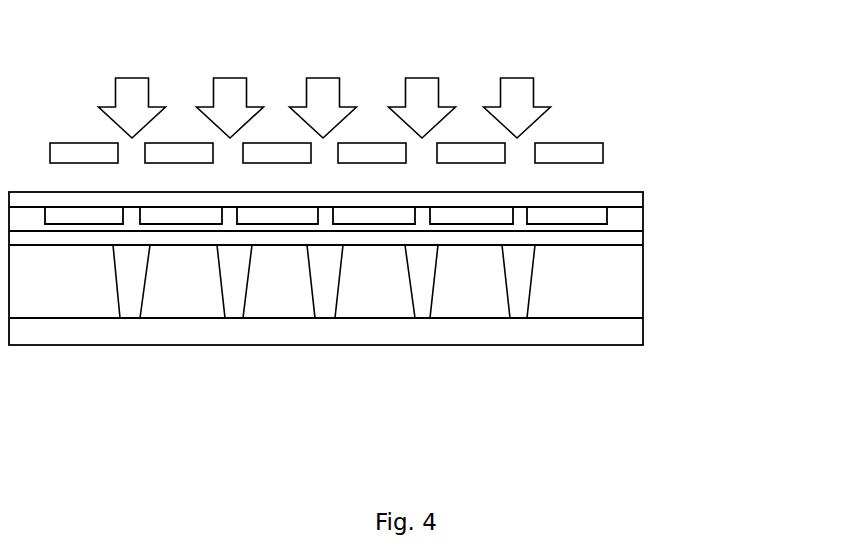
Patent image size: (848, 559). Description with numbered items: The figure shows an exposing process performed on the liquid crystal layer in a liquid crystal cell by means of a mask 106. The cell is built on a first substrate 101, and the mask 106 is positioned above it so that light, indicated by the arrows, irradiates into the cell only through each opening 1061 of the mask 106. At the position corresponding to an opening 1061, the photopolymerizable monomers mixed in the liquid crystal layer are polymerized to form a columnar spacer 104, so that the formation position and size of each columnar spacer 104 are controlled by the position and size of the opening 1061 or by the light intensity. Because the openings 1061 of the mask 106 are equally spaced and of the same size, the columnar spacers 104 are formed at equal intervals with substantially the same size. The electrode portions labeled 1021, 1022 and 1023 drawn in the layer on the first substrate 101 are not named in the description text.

The first substrate 101 is at (633, 198).
The first electrode 1021 is at (83, 215).
The second electrode 1022 is at (178, 215).
The third electrode 1023 is at (282, 215).
The columnar spacer 104 is at (522, 267).
The mask 106 is at (590, 151).
The opening 1061 is at (518, 152).